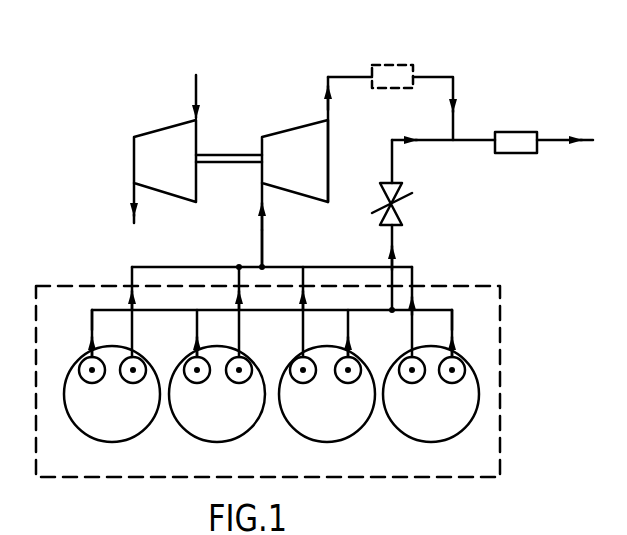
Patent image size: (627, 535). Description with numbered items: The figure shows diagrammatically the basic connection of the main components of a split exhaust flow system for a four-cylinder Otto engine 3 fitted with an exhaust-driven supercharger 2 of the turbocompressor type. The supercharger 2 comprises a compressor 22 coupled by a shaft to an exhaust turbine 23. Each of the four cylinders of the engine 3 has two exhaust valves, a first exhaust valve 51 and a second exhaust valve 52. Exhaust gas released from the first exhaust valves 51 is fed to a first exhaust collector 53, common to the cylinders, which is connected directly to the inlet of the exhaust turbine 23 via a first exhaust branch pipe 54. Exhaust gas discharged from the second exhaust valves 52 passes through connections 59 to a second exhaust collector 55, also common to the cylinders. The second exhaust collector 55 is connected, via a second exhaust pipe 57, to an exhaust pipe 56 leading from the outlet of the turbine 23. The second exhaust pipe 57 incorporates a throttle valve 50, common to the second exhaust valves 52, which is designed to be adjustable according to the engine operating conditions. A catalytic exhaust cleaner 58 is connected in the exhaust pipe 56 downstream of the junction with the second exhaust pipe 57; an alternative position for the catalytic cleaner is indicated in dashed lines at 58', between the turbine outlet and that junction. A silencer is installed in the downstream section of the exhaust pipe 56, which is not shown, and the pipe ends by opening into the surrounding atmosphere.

The exhaust-driven supercharger 2 is at (245, 133).
The internal combustion engine 3 is at (499, 474).
The compressor 22 is at (177, 130).
The exhaust turbine 23 is at (314, 130).
The throttle valve 50 is at (405, 217).
The first exhaust valve 51 is at (140, 384).
The second exhaust valve 52 is at (100, 384).
The first exhaust collector 53 is at (165, 267).
The first exhaust branch pipe 54 is at (261, 238).
The second exhaust collector 55 is at (256, 319).
The exhaust pipe 56 is at (333, 77).
The second exhaust pipe 57 is at (393, 166).
The catalytic exhaust cleaner 58 is at (516, 123).
The alternative catalytic exhaust cleaner position 58' is at (399, 55).
The connection 59 is at (90, 324).